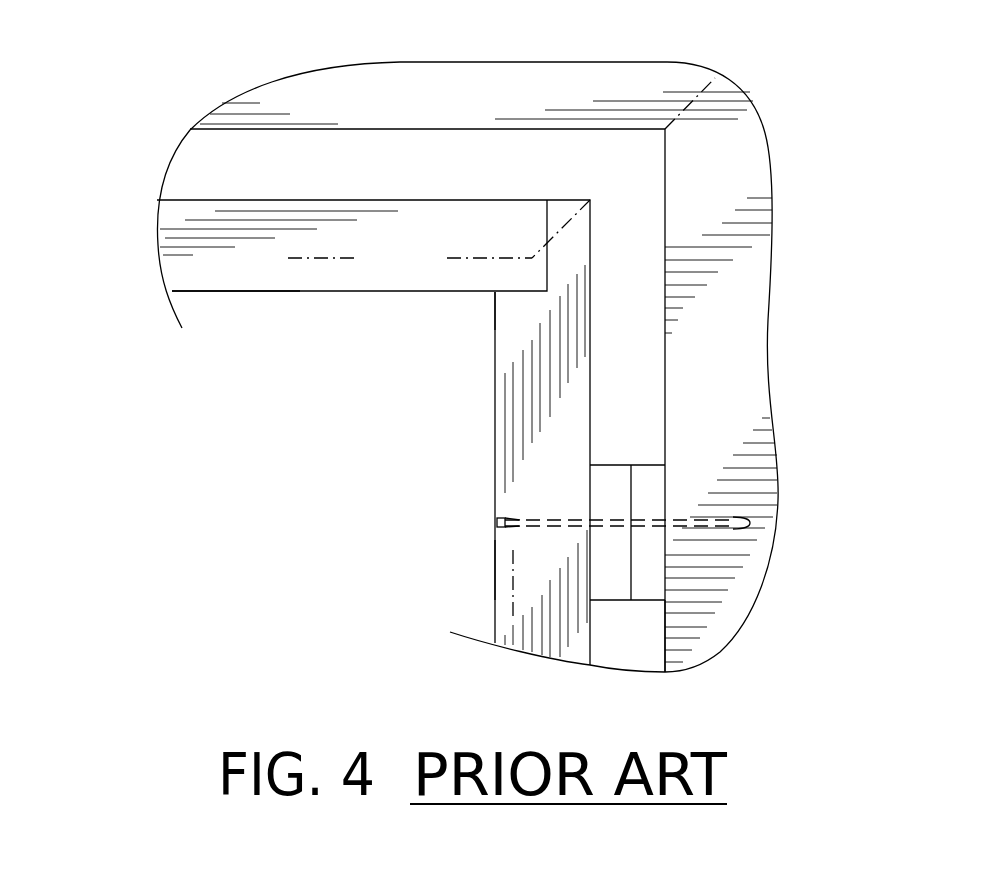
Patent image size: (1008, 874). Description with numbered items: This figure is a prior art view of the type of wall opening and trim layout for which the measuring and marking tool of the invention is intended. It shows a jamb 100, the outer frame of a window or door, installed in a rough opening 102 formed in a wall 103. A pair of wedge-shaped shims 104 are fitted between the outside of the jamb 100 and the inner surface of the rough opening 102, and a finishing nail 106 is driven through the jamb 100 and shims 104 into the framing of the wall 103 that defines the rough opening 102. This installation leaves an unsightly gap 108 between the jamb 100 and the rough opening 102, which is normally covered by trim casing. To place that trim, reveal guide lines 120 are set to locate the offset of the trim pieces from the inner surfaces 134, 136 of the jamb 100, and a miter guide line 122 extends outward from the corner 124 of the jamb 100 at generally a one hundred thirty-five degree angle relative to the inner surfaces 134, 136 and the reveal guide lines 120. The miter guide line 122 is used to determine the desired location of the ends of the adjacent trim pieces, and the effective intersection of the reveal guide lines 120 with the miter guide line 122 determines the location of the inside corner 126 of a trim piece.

The jamb 100 is at (503, 555).
The rough opening 102 is at (665, 632).
The wall 103 is at (747, 405).
The wedge-shaped shims 104 is at (643, 484).
The finishing nail 106 is at (532, 523).
The gap 108 is at (176, 173).
The reveal guide lines 120 is at (535, 273).
The miter guide line 122 is at (705, 88).
The corner 124 is at (490, 292).
The inside corner 126 is at (532, 258).
The inner surface 134 is at (225, 293).
The inner surface 136 is at (495, 577).